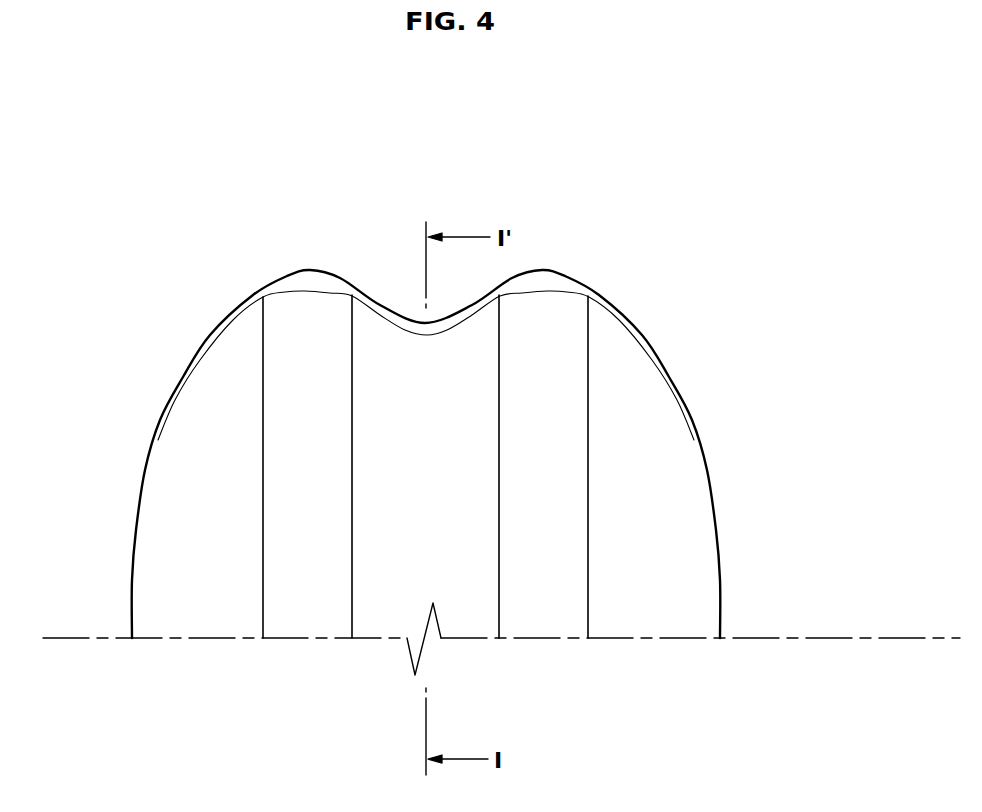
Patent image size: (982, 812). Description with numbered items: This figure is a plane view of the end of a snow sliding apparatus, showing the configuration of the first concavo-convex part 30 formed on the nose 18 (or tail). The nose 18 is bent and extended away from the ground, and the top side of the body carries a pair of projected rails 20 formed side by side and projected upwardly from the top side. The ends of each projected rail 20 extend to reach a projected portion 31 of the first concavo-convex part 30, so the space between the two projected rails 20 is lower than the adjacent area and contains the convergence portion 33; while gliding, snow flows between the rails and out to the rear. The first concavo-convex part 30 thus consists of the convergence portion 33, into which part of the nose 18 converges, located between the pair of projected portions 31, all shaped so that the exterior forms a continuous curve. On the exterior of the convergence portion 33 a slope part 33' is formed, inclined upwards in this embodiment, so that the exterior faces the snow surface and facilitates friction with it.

The nose 18 is at (693, 418).
The projected rail 20 is at (570, 540).
The first concavo-convex part 30 is at (340, 153).
The projected portion 31 is at (305, 282).
The convergence portion 33 is at (406, 236).
The slope part 33' is at (258, 344).